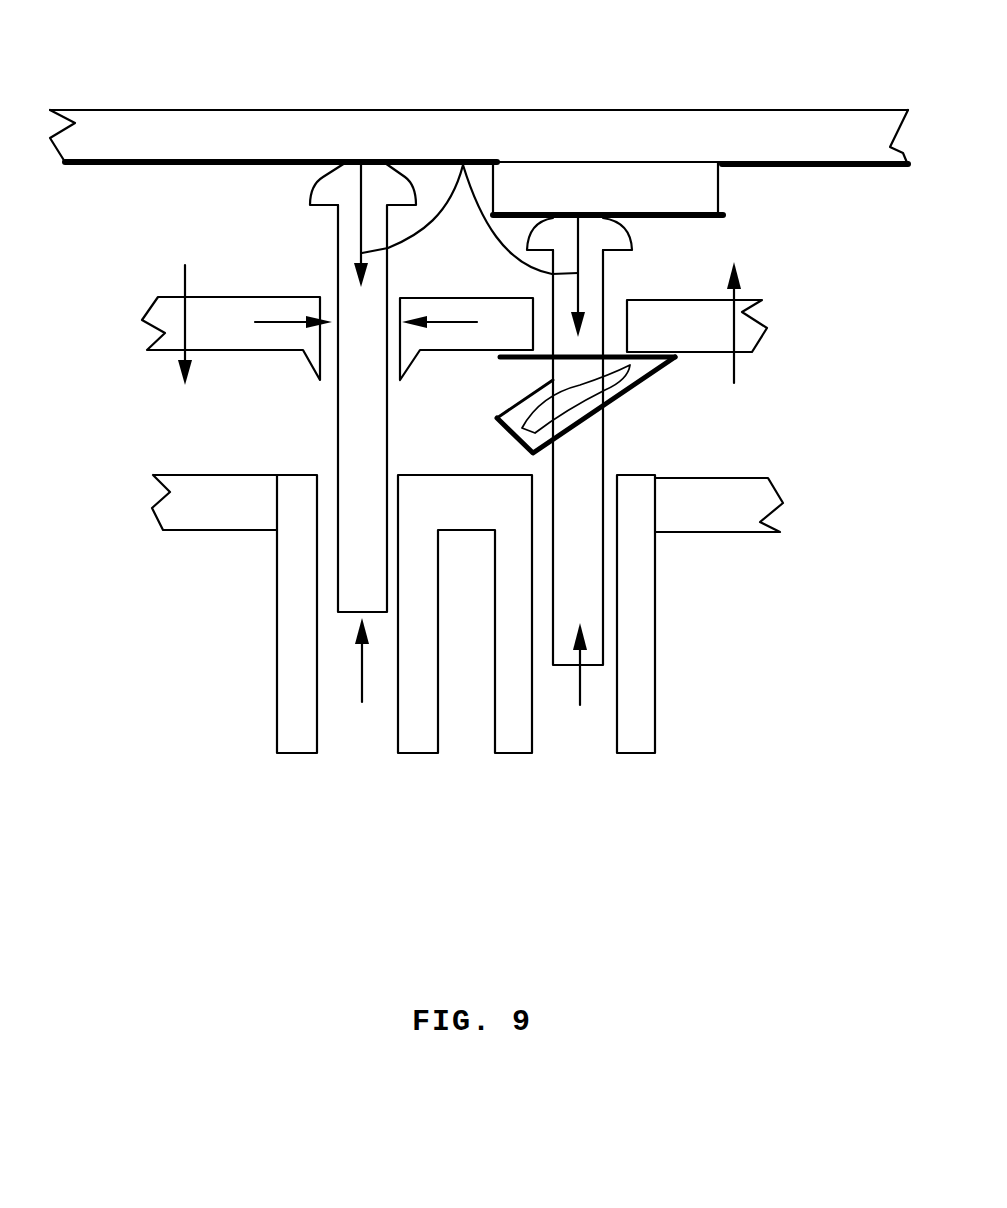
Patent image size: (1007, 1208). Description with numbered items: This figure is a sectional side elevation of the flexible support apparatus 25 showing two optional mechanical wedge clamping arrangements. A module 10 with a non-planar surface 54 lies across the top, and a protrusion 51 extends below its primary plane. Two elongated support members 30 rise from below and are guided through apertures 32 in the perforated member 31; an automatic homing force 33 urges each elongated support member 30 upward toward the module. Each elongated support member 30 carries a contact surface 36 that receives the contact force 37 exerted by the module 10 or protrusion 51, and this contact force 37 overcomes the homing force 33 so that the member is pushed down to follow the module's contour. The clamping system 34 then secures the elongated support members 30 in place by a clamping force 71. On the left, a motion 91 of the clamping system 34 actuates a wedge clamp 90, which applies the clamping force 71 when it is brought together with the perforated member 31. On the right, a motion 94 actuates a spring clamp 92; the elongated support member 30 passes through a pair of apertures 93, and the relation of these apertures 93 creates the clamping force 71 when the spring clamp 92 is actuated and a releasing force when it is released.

The module 10 is at (782, 140).
The non-planar surface 54 is at (242, 157).
The contact surface 36 is at (357, 160).
The protrusion 51 is at (602, 180).
The contact force 37 is at (463, 162).
The clamping system 34 is at (225, 313).
The clamping force 71 is at (287, 322).
The wedge clamp 90 is at (315, 360).
The motion of the clamping system 91 is at (165, 316).
The motion of the clamping system 94 is at (767, 328).
The spring clamp 92 is at (527, 425).
The apertures 93 is at (608, 373).
The elongated support member 30 is at (367, 477).
The perforated member 31 is at (733, 500).
The aperture 32 is at (617, 480).
The flexible support apparatus 25 is at (182, 640).
The homing force 33 is at (362, 671).